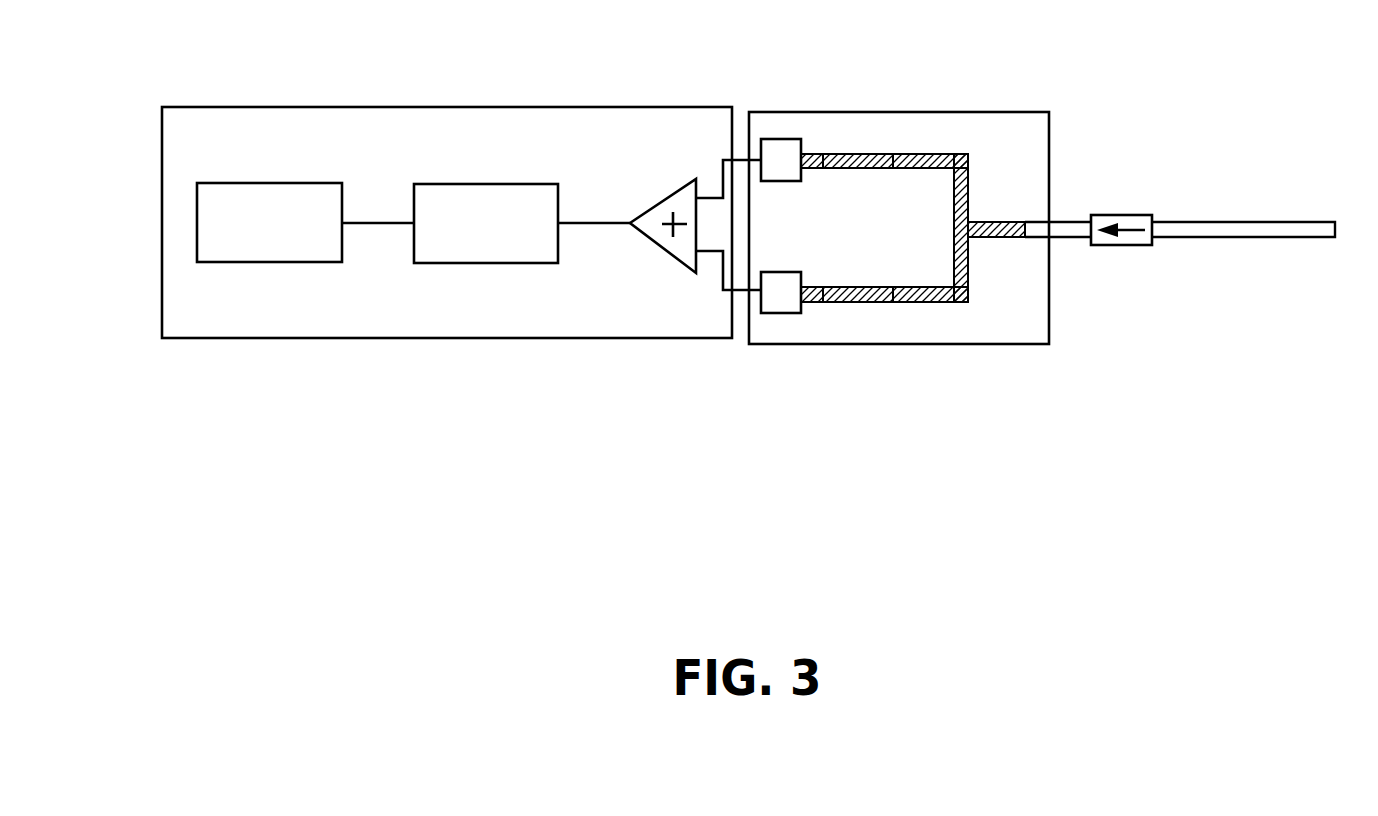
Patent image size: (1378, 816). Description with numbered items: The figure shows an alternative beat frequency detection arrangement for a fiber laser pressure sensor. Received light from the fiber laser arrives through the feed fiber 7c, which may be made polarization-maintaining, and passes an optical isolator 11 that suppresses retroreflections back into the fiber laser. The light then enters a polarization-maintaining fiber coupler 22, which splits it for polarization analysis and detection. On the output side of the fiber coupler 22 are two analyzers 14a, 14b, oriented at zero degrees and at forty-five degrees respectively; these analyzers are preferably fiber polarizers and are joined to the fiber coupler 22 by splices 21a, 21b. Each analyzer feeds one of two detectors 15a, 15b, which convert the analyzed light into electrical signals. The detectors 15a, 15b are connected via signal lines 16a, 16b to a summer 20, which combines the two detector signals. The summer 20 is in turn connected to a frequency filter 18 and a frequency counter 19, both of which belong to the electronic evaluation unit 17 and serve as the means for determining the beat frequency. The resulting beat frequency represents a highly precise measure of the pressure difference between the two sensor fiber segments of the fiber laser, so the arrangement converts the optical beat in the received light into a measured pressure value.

The feed fiber 7c is at (1235, 230).
The optical isolator 11 is at (1138, 222).
The analyzer 14a is at (821, 160).
The analyzer 14b is at (843, 300).
The detector 15a is at (775, 157).
The detector 15b is at (777, 295).
The signal line 16a is at (735, 305).
The signal line 16b is at (735, 292).
The electronic evaluation unit 17 is at (217, 313).
The frequency filter 18 is at (467, 239).
The frequency counter 19 is at (243, 239).
The summer 20 is at (654, 222).
The splice 21a is at (893, 152).
The splice 21b is at (890, 300).
The polarization-maintaining fiber coupler 22 is at (963, 227).